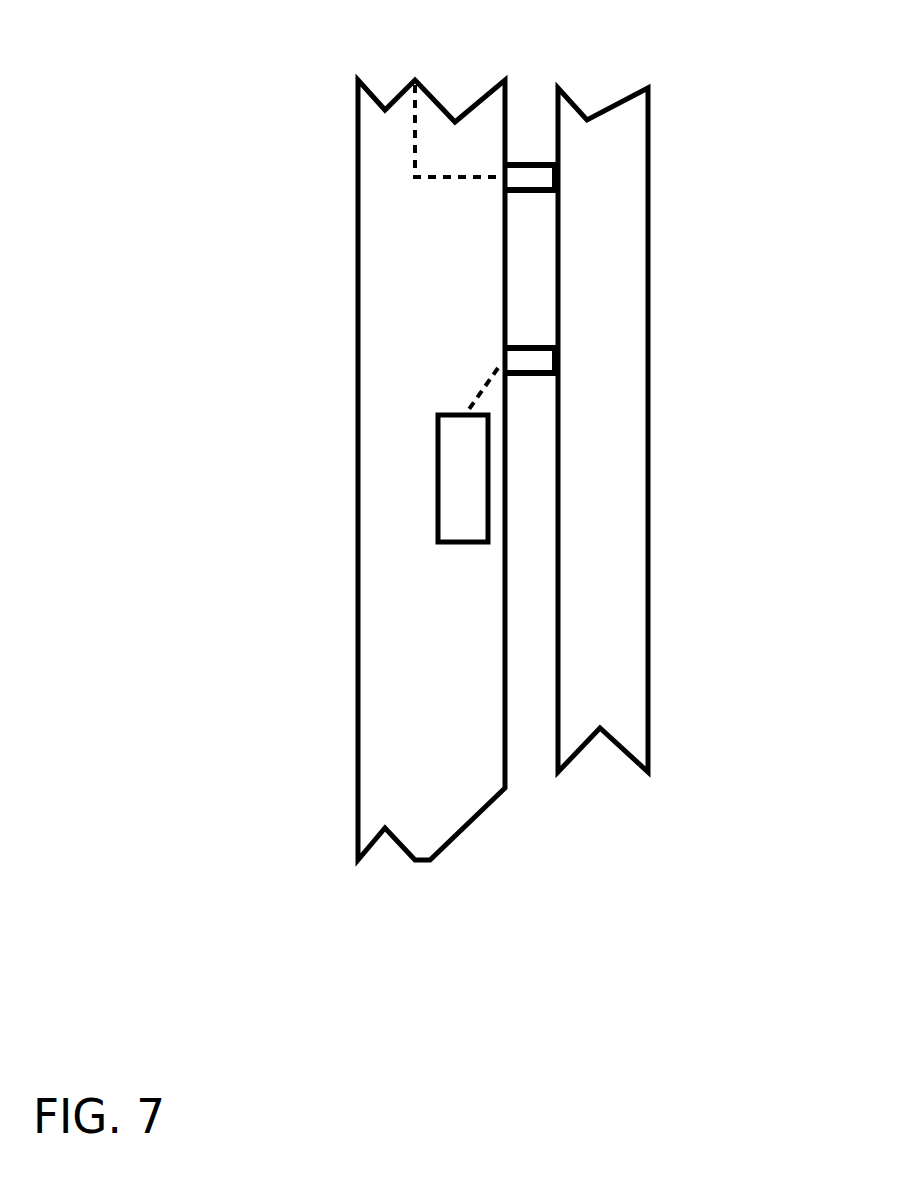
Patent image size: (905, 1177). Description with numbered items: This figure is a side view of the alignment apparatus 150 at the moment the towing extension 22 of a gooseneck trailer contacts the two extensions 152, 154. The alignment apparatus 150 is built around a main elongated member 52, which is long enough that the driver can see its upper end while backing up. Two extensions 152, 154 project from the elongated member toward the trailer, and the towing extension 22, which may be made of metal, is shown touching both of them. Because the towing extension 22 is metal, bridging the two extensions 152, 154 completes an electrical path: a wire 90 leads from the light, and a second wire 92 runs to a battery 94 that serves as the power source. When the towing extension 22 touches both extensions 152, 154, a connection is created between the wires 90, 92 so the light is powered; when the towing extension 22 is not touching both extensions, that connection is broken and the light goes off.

The alignment apparatus 150 is at (426, 436).
The extension 152 is at (528, 130).
The extension 154 is at (241, 335).
The towing extension 22 is at (623, 479).
The main elongated member 52 is at (408, 543).
The wire 90 is at (450, 177).
The second wire 92 is at (483, 380).
The battery 94 is at (440, 527).